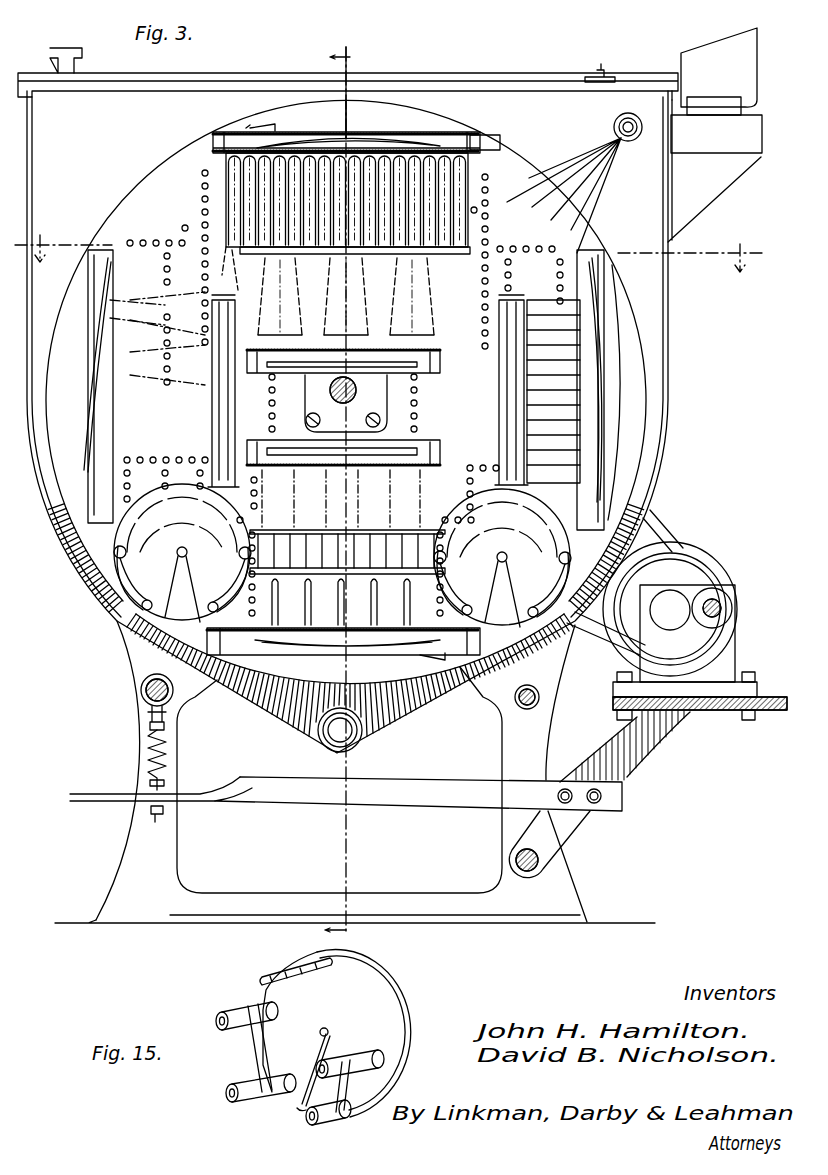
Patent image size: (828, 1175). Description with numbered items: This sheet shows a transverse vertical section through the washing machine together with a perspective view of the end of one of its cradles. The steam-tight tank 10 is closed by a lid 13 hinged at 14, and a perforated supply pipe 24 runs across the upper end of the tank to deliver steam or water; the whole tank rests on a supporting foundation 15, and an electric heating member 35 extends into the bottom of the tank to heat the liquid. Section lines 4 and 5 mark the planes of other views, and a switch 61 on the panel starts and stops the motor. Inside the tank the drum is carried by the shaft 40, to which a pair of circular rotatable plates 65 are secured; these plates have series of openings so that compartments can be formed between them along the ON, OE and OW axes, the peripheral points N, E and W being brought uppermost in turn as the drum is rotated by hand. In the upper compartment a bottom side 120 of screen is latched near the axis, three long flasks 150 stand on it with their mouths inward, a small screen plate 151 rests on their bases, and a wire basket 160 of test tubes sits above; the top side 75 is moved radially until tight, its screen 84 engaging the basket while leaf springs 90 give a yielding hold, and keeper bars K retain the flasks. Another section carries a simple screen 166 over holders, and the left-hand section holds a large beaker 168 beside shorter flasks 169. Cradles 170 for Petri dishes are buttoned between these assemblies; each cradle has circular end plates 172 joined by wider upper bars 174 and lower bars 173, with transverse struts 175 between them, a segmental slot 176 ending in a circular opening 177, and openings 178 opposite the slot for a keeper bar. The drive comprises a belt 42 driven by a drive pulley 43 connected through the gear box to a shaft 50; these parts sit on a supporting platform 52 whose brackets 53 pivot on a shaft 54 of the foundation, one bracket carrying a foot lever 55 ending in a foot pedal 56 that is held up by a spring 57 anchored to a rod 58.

In FIG. 3, the tank 10 is at (666, 352).
In FIG. 3, the lid 13 is at (413, 80).
In FIG. 3, the hinge 14 is at (593, 76).
In FIG. 3, the perforated supply pipe 24 is at (630, 112).
In FIG. 3, the switch 61 is at (712, 98).
In FIG. 3, the section line 4 is at (336, 495).
In FIG. 3, the section line 5 is at (282, 740).
In FIG. 3, the screen of the top plate 84 is at (450, 148).
In FIG. 3, the leaf springs 90 is at (366, 143).
In FIG. 3, the wire basket 160 is at (226, 190).
In FIG. 3, the flasks 150 is at (308, 294).
In FIG. 3, the screen plate 151 is at (257, 280).
In FIG. 3, the bottom side 120 is at (505, 404).
In FIG. 3, the shaft 40 is at (332, 392).
In FIG. 3, the screen 166 is at (408, 523).
In FIG. 3, the top side 75 is at (472, 140).
In FIG. 3, the beaker 168 is at (355, 387).
In FIG. 3, the keeper bar K is at (216, 170).
In FIG. 3, the flasks 169 is at (124, 278).
In FIG. 3, the rotatable plates 65 is at (564, 195).
In FIG. 3, the peripheral point N is at (351, 100).
In FIG. 3, the peripheral point W is at (42, 386).
In FIG. 3, the peripheral point E is at (640, 392).
In FIG. 3, the cradle 170 is at (147, 577).
In FIG. 3, the drive pulley 43 is at (702, 570).
In FIG. 3, the belt 42 is at (660, 532).
In FIG. 3, the shaft 50 is at (722, 608).
In FIG. 3, the supporting platform 52 is at (741, 716).
In FIG. 3, the brackets 53 is at (610, 752).
In FIG. 3, the foundation 15 is at (118, 865).
In FIG. 3, the heating member 35 is at (362, 742).
In FIG. 3, the rod 58 is at (141, 690).
In FIG. 3, the spring 57 is at (146, 744).
In FIG. 3, the foot pedal 56 is at (96, 802).
In FIG. 3, the foot lever 55 is at (416, 806).
In FIG. 3, the shaft 54 is at (546, 860).
In FIG. 15, the circular end plates 172 is at (358, 995).
In FIG. 15, the openings 178 is at (344, 957).
In FIG. 15, the upper bars 174 is at (248, 1003).
In FIG. 15, the lower bars 173 is at (240, 1097).
In FIG. 15, the transverse struts 175 is at (258, 1062).
In FIG. 15, the circular opening 177 is at (345, 1016).
In FIG. 15, the segmental slot 176 is at (300, 1110).